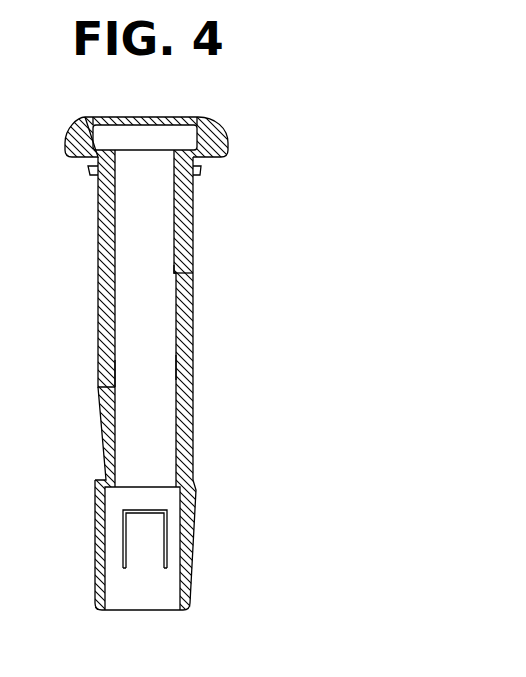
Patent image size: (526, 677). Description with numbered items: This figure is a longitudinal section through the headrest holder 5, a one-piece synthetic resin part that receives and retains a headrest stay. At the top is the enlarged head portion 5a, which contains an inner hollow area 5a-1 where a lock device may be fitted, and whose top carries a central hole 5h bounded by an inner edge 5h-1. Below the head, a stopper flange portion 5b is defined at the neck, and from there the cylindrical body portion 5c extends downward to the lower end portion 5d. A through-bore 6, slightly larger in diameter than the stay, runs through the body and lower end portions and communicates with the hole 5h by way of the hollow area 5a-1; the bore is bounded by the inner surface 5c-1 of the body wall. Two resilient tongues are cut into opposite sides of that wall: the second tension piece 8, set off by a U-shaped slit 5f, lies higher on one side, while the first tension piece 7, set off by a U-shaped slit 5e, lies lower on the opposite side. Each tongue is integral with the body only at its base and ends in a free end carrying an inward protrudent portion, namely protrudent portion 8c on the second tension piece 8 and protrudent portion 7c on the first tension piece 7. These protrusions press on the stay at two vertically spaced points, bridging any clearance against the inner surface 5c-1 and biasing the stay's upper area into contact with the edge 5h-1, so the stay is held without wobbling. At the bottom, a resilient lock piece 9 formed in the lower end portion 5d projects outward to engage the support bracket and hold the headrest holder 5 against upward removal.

The headrest holder 5 is at (295, 222).
The head portion 5a is at (224, 132).
The inner hollow area 5a-1 is at (193, 120).
The stopper flange portion 5b is at (197, 171).
The cylindrical body portion 5c is at (193, 322).
The inner surface of the cylindrical body portion 5c-1 is at (193, 368).
The lower end portion 5d is at (193, 563).
The U-shaped slit 5e is at (115, 385).
The U-shaped slit 5f is at (193, 273).
The hole 5h is at (141, 121).
The inner edge of the hole 5h-1 is at (125, 117).
The through-bore 6 is at (193, 203).
The first tension piece 7 is at (98, 351).
The protrudent portion 7c is at (120, 372).
The second tension piece 8 is at (193, 228).
The protrudent portion 8c is at (175, 262).
The lock piece 9 is at (150, 535).